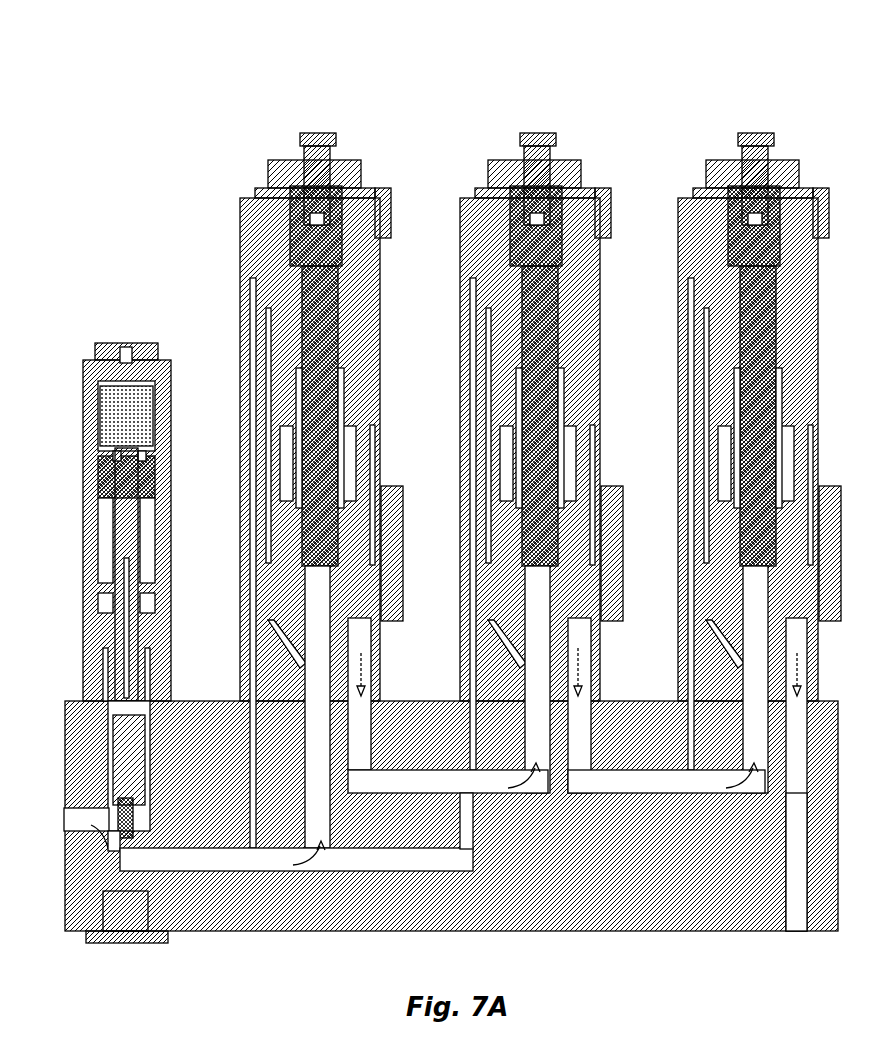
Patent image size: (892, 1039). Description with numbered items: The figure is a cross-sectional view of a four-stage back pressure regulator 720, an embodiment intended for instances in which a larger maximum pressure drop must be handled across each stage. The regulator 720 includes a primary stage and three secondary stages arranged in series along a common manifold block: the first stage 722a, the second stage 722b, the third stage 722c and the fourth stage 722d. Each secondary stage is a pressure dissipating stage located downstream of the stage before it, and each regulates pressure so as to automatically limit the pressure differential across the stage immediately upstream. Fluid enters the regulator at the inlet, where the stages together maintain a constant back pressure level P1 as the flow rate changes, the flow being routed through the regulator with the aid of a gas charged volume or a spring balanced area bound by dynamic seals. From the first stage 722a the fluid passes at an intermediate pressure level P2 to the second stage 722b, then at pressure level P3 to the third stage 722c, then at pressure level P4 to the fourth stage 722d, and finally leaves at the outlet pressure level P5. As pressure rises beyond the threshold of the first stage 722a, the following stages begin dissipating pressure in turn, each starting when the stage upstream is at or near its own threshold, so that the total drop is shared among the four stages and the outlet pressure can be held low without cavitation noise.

The back pressure regulator 720 is at (163, 80).
The first stage 722a is at (215, 268).
The second stage 722b is at (390, 86).
The third stage 722c is at (610, 86).
The fourth stage 722d is at (820, 86).
The back pressure level P1 is at (75, 827).
The pressure level P2 is at (290, 851).
The pressure level P3 is at (448, 806).
The pressure level P4 is at (665, 747).
The outlet pressure level P5 is at (795, 854).